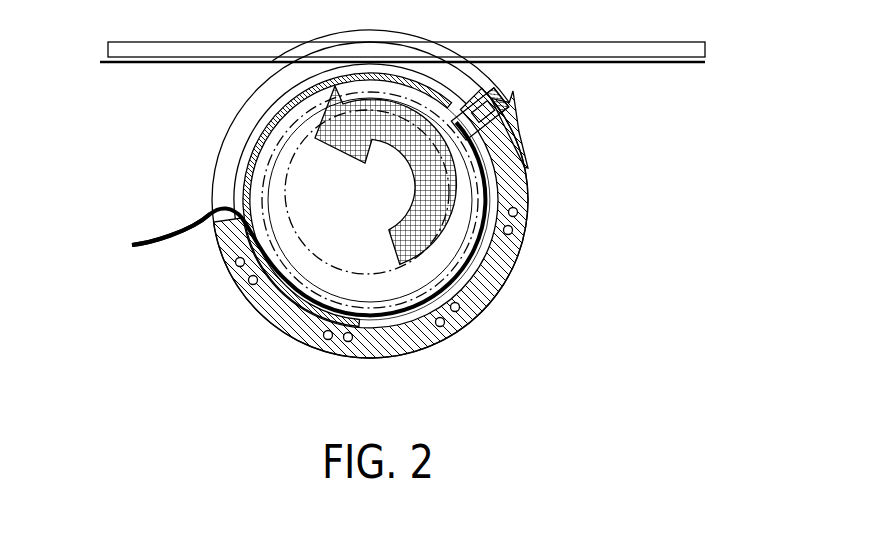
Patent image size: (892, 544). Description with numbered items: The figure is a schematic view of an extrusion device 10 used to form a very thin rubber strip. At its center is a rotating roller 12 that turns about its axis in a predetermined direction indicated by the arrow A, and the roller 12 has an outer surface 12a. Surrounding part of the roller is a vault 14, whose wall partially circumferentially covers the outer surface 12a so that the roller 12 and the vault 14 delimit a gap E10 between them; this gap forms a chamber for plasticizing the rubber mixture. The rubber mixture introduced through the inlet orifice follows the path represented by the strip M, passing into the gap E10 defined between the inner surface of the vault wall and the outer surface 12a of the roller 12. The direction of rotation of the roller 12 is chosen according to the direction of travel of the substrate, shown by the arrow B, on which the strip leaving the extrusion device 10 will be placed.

The extrusion device 10 is at (168, 300).
The rotating roller 12 is at (343, 317).
The outer surface 12a is at (258, 152).
The vault 14 is at (497, 270).
The strip M is at (158, 218).
The arrow A is at (385, 175).
The arrow B is at (647, 83).
The gap E10 is at (403, 323).